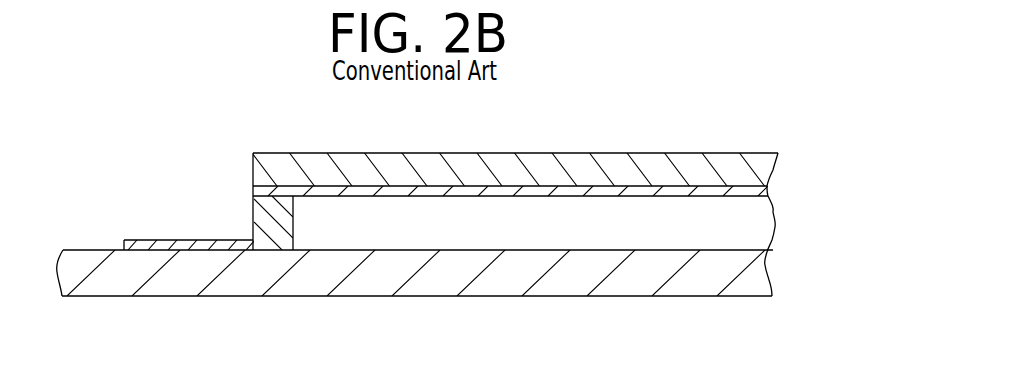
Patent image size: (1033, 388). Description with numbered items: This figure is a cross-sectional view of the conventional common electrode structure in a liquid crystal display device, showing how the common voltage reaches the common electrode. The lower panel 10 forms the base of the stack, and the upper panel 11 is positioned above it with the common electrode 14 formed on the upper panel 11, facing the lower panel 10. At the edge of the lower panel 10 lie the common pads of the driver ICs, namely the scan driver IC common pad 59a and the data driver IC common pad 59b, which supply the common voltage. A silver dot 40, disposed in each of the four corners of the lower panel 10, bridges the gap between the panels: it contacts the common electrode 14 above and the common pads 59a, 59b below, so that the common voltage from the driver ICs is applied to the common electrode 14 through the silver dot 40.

The lower panel 10 is at (692, 285).
The upper panel 11 is at (660, 162).
The common electrode 14 is at (360, 190).
The silver dot 40 is at (267, 217).
The scan driver IC common pad 59a is at (189, 240).
The data driver IC common pad 59b is at (171, 224).